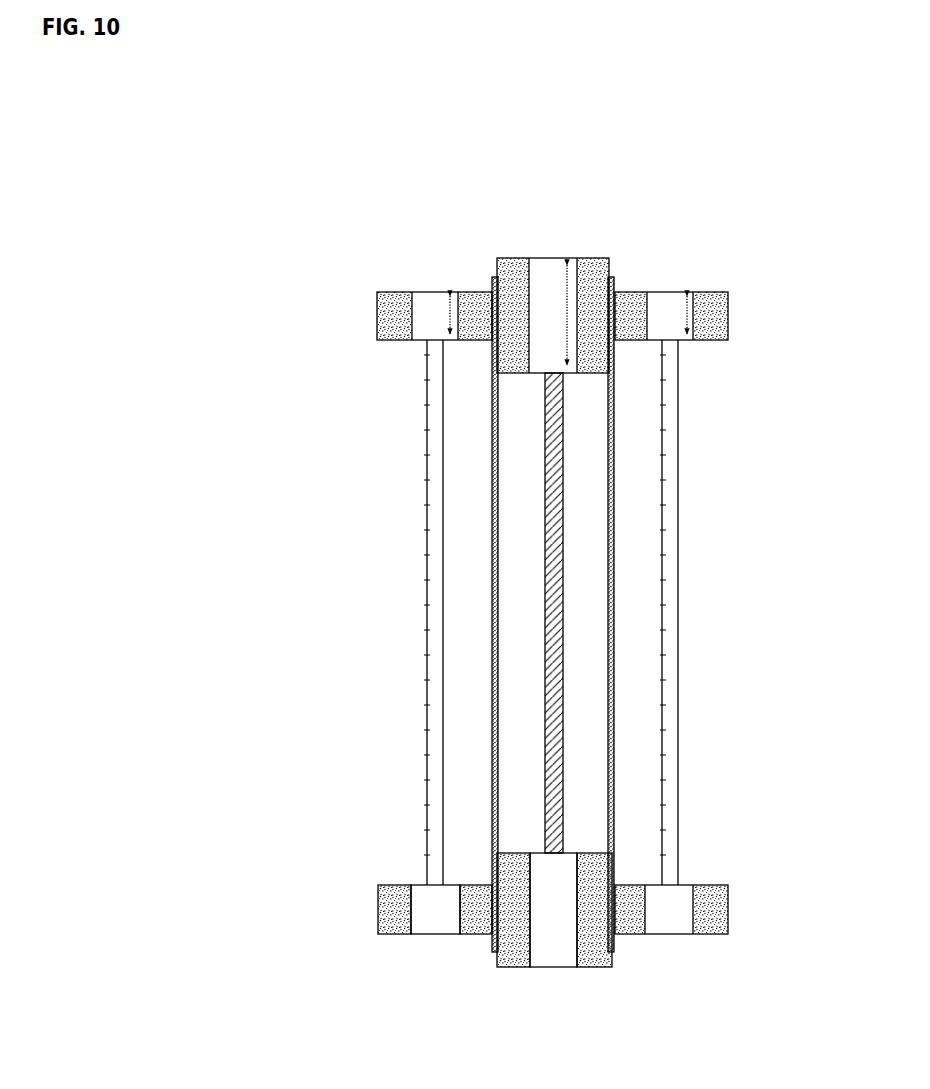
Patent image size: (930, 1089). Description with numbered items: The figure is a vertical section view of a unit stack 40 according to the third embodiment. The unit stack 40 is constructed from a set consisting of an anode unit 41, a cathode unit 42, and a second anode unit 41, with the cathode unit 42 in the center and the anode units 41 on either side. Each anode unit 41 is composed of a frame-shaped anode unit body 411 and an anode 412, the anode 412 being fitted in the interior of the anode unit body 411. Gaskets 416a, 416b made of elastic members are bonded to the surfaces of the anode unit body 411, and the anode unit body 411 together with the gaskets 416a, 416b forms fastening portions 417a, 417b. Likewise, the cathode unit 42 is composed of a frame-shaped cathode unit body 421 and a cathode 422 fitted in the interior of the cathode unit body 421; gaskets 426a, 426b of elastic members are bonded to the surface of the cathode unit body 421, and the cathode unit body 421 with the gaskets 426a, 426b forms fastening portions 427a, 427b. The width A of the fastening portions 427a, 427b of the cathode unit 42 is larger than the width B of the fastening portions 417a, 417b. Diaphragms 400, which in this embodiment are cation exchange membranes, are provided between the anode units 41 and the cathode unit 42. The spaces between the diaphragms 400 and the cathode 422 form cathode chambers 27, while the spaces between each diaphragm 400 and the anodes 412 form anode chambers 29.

The unit stack 40 is at (542, 158).
The anode unit 41 is at (441, 247).
The cathode unit 42 is at (557, 243).
The diaphragm 400 is at (492, 512).
The anode 412 is at (440, 612).
The cathode 422 is at (550, 710).
The anode chamber 29 is at (482, 651).
The cathode chamber 27 is at (531, 625).
The gasket 416a is at (380, 915).
The anode unit body 411 is at (428, 915).
The gasket 416b is at (477, 915).
The fastening portion 417a is at (370, 1003).
The fastening portion 417b is at (472, 1003).
The gasket 426a is at (516, 968).
The cathode unit body 421 is at (552, 953).
The gasket 426b is at (590, 953).
The fastening portion 427a is at (580, 1023).
The fastening portion 427b is at (680, 1023).